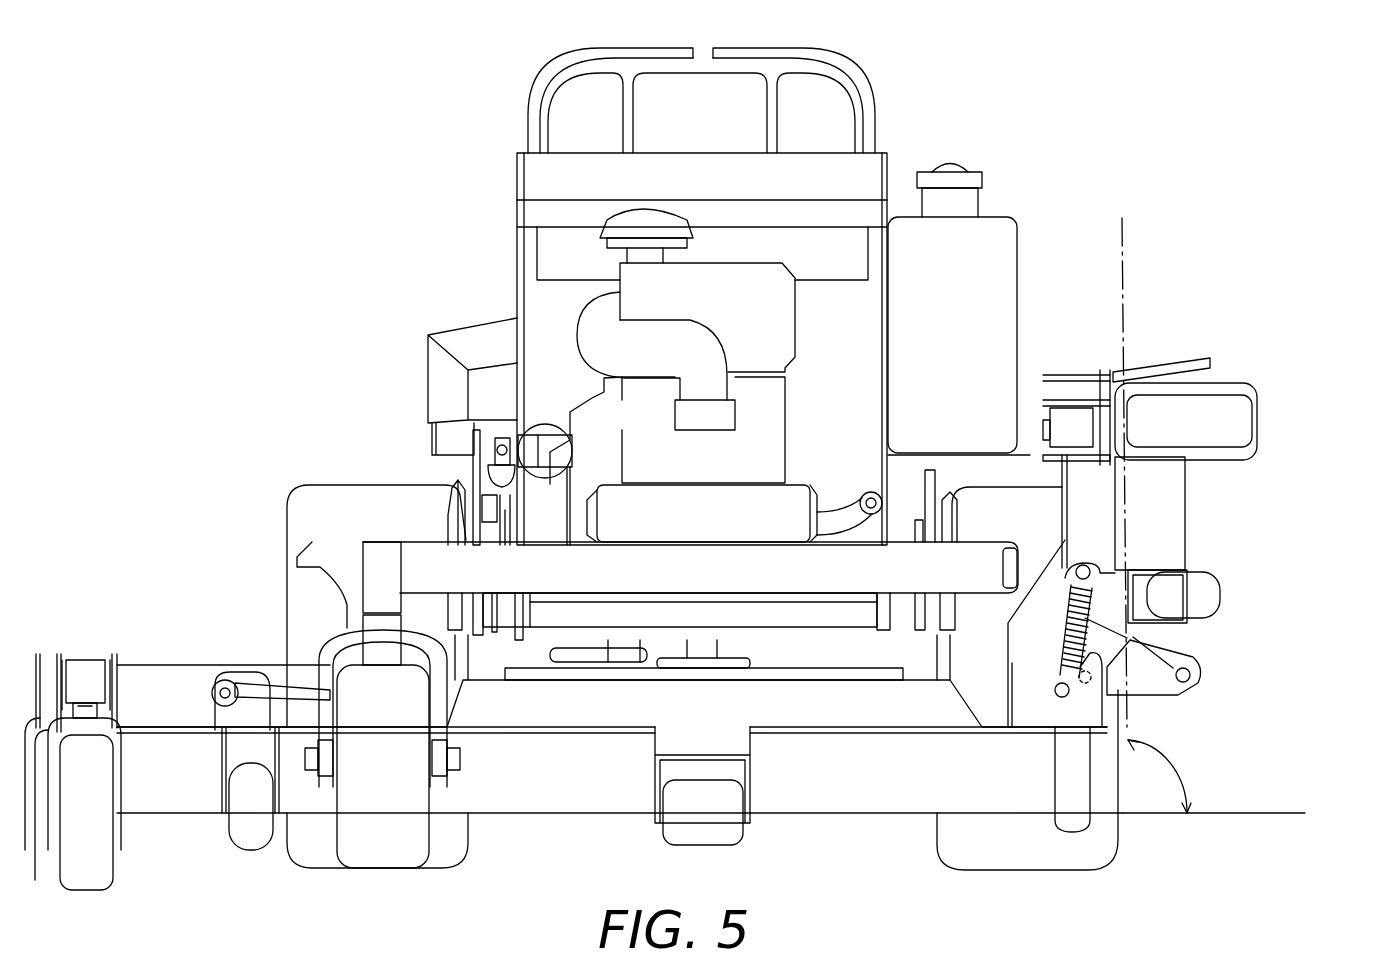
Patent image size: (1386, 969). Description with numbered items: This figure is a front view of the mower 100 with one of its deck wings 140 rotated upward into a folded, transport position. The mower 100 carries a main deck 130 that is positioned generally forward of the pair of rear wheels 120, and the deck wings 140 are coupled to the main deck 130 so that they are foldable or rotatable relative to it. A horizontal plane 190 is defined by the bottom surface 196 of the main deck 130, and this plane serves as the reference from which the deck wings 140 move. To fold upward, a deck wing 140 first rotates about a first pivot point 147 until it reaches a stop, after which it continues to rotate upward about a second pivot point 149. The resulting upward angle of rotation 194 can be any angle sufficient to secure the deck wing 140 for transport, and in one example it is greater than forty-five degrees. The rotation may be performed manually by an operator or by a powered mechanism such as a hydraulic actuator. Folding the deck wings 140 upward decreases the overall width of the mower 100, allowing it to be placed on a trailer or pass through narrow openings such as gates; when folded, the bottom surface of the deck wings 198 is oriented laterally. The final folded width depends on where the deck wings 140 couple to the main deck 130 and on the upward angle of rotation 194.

The mower 100 is at (1157, 150).
The rear wheels 120 is at (307, 505).
The main deck 130 is at (810, 707).
The deck wings 140 is at (175, 732).
The first pivot point 147 is at (1193, 663).
The second pivot point 149 is at (1100, 645).
The horizontal plane 190 is at (1244, 818).
The upward angle of rotation 194 is at (1172, 760).
The bottom surface 196 is at (546, 797).
The bottom surface of the deck wings 198 is at (1185, 497).